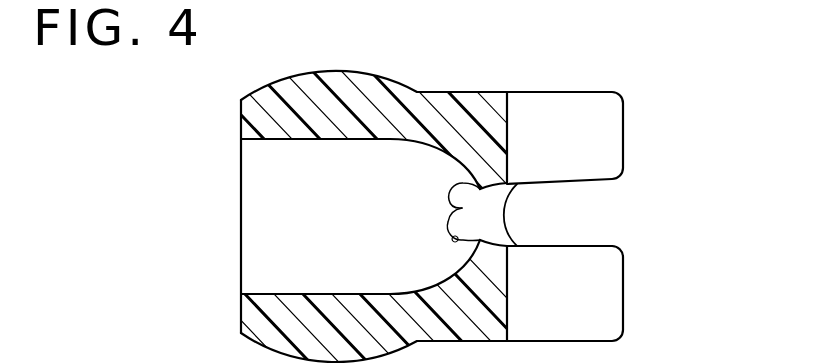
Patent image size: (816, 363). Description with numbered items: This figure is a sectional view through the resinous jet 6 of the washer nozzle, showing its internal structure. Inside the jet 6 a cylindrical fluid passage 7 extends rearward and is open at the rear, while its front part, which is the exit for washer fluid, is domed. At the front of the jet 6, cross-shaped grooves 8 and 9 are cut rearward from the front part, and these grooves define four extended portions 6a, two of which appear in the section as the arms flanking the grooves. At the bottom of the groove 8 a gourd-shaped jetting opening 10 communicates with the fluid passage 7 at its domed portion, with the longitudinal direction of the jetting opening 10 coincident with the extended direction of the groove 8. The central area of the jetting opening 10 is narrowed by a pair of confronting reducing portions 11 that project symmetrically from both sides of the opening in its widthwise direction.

The jet 6 is at (401, 83).
The extended portions 6a is at (625, 142).
The fluid passage 7 is at (247, 140).
The groove 8 is at (605, 246).
The groove 9 is at (508, 112).
The jetting opening 10 is at (452, 240).
The reducing portions 11 is at (462, 226).